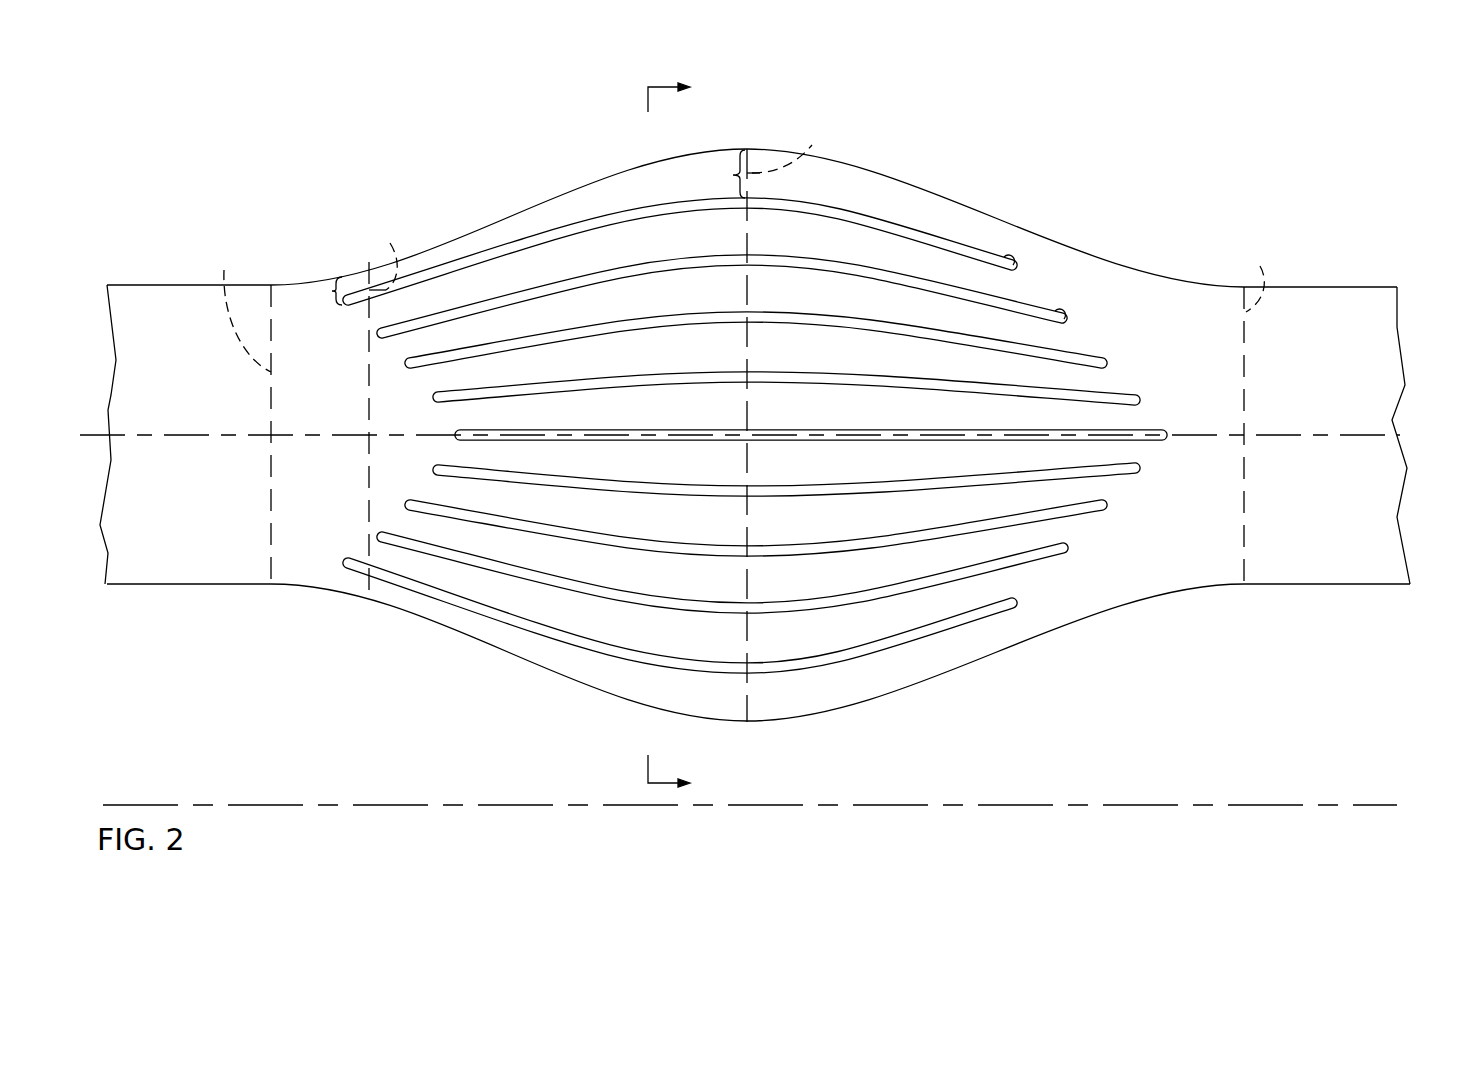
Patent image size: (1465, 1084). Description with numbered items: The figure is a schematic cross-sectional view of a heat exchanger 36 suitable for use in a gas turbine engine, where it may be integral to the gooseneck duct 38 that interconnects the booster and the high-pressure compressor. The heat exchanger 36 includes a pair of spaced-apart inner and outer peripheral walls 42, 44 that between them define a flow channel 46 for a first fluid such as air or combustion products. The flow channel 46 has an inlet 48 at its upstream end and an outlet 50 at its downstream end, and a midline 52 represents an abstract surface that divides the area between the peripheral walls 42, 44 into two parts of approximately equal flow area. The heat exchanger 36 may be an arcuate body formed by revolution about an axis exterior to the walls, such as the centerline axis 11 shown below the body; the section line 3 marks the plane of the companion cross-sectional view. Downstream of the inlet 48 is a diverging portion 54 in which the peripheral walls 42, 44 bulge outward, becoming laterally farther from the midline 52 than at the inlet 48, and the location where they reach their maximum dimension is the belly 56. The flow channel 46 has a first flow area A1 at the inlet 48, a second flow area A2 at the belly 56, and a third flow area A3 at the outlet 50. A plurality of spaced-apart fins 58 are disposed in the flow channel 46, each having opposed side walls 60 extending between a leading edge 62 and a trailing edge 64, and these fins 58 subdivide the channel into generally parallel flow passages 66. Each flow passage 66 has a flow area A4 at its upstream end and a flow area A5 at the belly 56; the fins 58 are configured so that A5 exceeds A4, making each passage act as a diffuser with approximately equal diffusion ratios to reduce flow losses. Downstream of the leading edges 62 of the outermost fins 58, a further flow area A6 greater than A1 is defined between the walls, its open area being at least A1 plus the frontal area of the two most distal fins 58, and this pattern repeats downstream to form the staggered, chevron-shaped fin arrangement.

The centerline axis 11 is at (290, 805).
The heat exchanger 36 is at (888, 130).
The gooseneck duct 38 is at (185, 284).
The inner peripheral wall 42 is at (1136, 605).
The outer peripheral wall 44 is at (1156, 273).
The flow channel 46 is at (1203, 372).
The inlet 48 is at (271, 272).
The outlet 50 is at (1244, 598).
The midline 52 is at (1405, 435).
The diverging portion 54 is at (524, 203).
The belly 56 is at (747, 136).
The fins 58 is at (1056, 316).
The side walls 60 is at (950, 233).
The leading edge 62 is at (345, 304).
The trailing edge 64 is at (1013, 266).
The flow passages 66 is at (613, 220).
The section line 3- 3 is at (678, 437).
The first flow area A1 is at (244, 309).
The second flow area A2 is at (788, 149).
The third flow area A3 is at (1259, 278).
The flow passage upstream flow area A4 is at (322, 293).
The flow passage belly flow area A5 is at (720, 174).
The downstream station flow area A6 is at (376, 411).